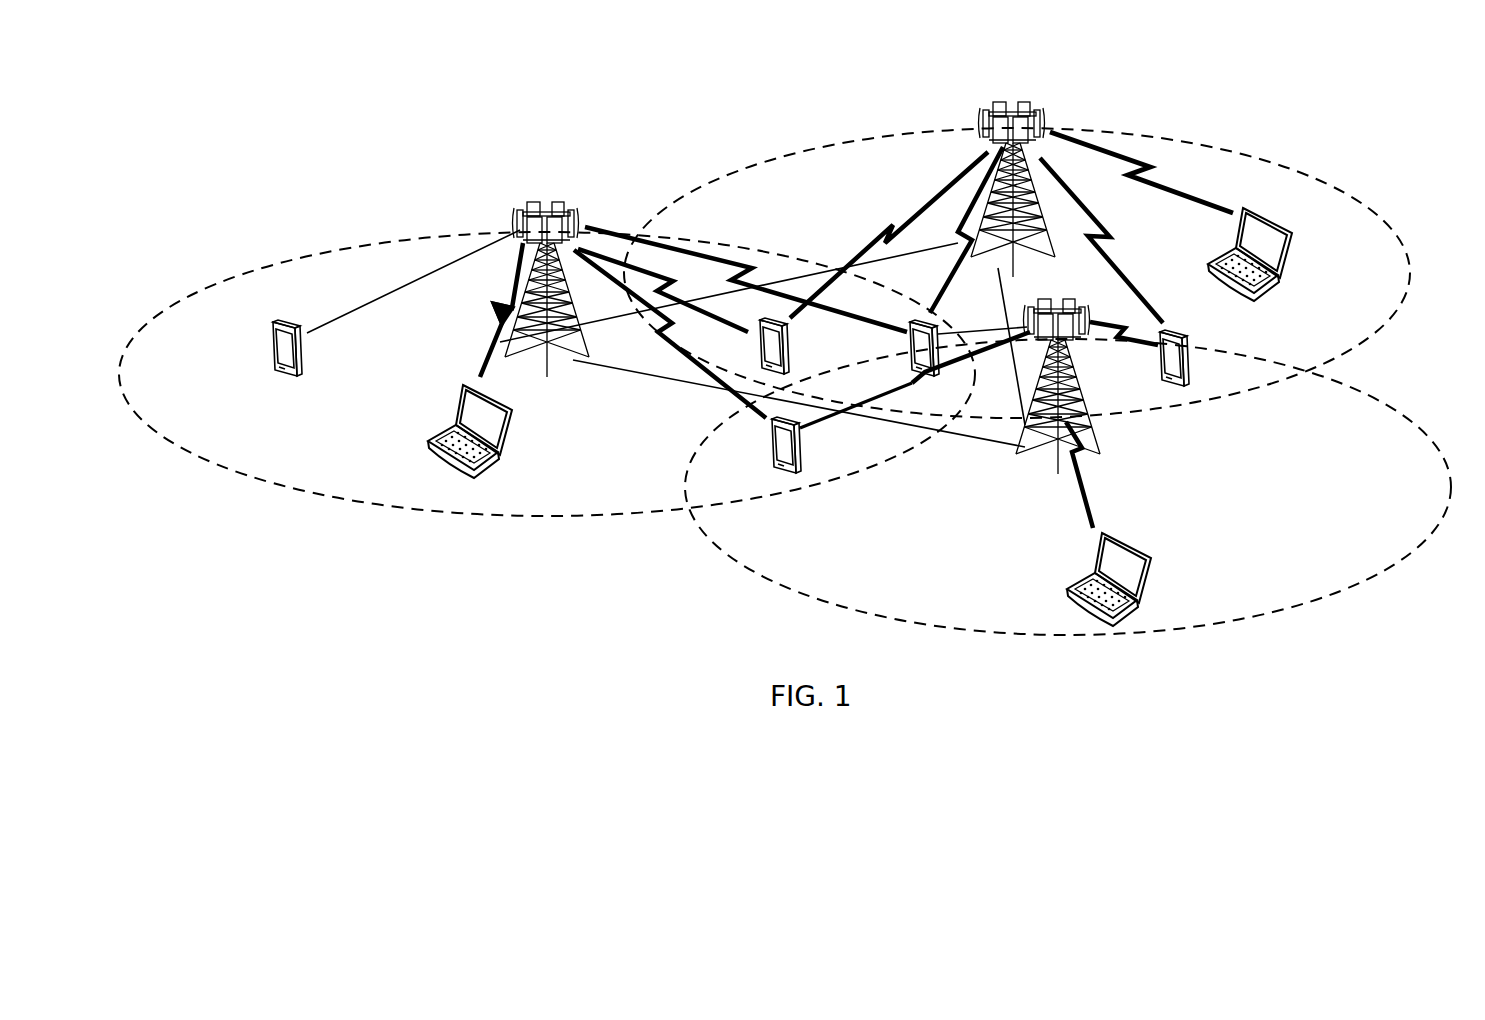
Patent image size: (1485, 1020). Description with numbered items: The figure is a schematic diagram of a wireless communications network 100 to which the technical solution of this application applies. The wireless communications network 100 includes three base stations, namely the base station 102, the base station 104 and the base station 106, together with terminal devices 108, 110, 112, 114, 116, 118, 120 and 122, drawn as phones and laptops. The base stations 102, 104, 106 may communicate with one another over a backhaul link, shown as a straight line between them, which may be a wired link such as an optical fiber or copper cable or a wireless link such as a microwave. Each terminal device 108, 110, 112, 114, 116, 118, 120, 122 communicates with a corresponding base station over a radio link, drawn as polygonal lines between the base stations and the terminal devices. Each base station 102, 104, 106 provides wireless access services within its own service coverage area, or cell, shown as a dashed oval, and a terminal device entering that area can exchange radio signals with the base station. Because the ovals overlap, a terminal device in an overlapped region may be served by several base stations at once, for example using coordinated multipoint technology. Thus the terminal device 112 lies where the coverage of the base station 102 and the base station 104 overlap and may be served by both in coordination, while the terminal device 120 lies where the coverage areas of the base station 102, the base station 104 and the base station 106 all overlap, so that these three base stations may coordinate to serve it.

The wireless communications network 100 is at (785, 337).
The base station 102 is at (541, 201).
The base station 104 is at (1050, 295).
The base station 106 is at (1060, 89).
The terminal device 108 is at (302, 362).
The terminal device 110 is at (512, 412).
The terminal device 112 is at (772, 447).
The terminal device 114 is at (1174, 542).
The terminal device 116 is at (1188, 355).
The terminal device 118 is at (1292, 228).
The terminal device 120 is at (912, 358).
The terminal device 122 is at (786, 334).